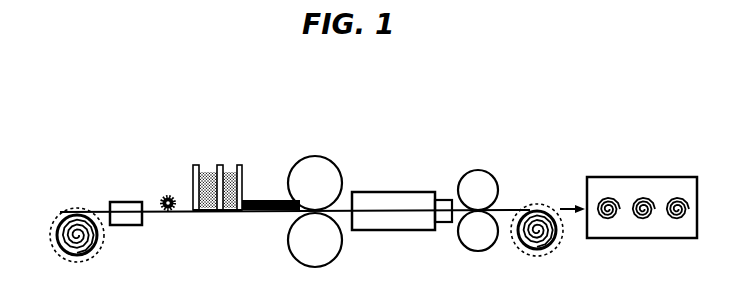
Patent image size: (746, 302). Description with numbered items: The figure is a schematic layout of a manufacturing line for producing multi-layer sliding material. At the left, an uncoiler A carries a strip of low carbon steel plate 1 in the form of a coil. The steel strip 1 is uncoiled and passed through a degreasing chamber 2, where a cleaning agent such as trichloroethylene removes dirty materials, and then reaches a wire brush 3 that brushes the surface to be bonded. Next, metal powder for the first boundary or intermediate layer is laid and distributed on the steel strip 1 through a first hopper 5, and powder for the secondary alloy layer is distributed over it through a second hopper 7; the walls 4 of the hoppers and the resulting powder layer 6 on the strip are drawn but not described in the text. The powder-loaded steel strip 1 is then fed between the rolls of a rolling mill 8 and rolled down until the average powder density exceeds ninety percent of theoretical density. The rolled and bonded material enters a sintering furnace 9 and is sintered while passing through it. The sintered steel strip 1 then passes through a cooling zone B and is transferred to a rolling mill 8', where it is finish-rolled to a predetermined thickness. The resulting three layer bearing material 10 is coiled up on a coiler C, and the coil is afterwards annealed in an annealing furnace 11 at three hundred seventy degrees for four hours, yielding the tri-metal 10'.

The steel strip 1 is at (100, 211).
The degreasing chamber 2 is at (120, 225).
The wire brush 3 is at (167, 195).
The hopper walls 4 is at (212, 210).
The first hopper 5 is at (206, 165).
The powder layer on strip 6 is at (238, 188).
The second hopper 7 is at (237, 165).
The rolling mill 8 is at (324, 220).
The rolling mill 8' is at (471, 233).
The sintering furnace 9 is at (392, 192).
The three layer bearing material 10 is at (537, 207).
The tri-metal 10' is at (639, 214).
The annealing furnace 11 is at (623, 177).
The uncoiler A is at (48, 232).
The cooling zone B is at (446, 200).
The coiler C is at (524, 256).